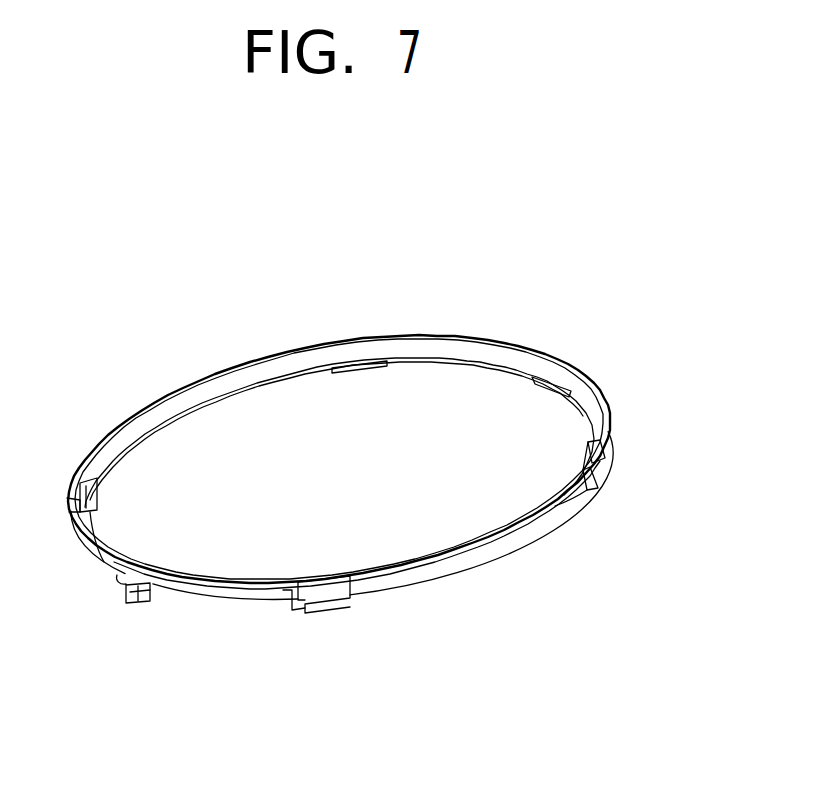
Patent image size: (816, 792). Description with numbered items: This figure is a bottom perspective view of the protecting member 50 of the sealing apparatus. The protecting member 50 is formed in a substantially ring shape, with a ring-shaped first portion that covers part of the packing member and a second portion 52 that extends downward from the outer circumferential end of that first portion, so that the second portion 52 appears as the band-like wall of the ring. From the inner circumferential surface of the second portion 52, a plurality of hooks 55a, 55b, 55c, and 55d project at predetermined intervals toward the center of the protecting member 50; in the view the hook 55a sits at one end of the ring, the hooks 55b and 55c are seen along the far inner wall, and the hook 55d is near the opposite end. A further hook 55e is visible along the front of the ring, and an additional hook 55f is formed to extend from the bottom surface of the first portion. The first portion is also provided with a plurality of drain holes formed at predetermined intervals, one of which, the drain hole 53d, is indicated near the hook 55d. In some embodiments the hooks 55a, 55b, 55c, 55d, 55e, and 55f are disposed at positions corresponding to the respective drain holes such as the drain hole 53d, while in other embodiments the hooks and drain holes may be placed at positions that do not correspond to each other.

The protecting member 50 is at (210, 267).
The second portion 52 is at (458, 568).
The drain hole 53d is at (592, 450).
The hook 55a is at (87, 514).
The hook 55b is at (358, 373).
The hook 55c is at (535, 393).
The hook 55d is at (600, 486).
The hook 55e is at (322, 613).
The additional hook 55f is at (146, 604).